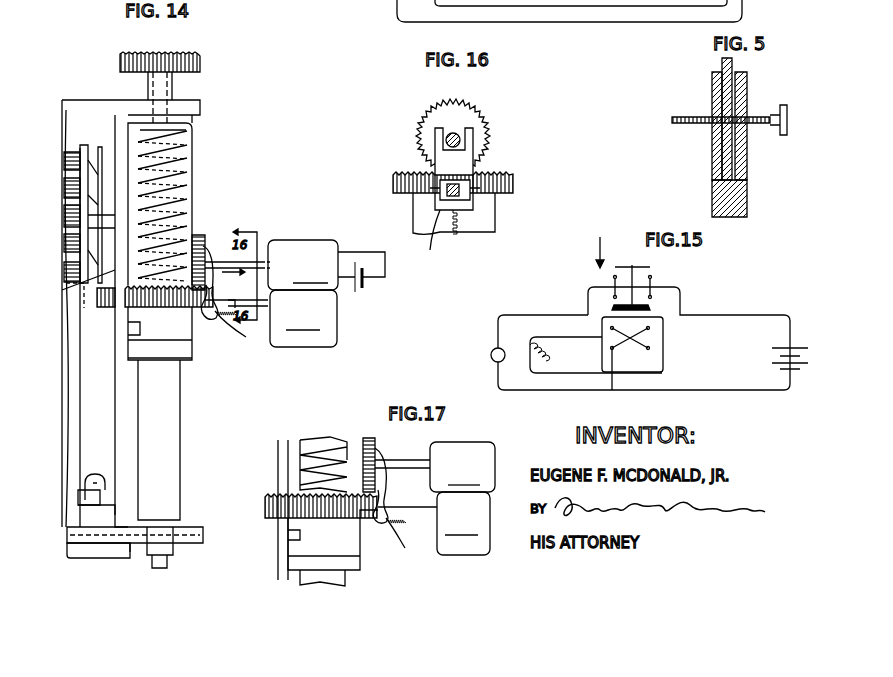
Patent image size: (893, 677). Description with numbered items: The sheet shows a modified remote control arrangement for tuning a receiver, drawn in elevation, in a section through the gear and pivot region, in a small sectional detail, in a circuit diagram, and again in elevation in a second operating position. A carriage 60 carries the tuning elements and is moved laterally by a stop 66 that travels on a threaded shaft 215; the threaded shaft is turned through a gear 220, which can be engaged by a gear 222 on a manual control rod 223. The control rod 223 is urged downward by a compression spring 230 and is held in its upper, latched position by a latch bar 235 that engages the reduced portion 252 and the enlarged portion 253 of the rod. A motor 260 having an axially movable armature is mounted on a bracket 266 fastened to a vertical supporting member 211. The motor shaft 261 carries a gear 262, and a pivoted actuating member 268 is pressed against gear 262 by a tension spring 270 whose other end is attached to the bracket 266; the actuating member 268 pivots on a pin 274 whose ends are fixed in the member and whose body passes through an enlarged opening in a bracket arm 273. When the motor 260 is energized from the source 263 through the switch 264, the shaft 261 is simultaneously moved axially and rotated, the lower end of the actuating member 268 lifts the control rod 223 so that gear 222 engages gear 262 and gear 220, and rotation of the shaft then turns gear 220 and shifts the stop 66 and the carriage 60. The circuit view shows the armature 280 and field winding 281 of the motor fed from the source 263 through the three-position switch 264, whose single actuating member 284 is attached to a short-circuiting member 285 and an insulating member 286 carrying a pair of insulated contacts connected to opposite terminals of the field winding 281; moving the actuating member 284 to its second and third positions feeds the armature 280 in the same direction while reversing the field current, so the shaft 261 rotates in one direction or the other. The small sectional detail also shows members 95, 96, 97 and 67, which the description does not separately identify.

In FIG. 14, the compression spring 230 is at (182, 140).
In FIG. 17, the compression spring 230 is at (335, 432).
In FIG. 14, the threaded shaft 215 is at (65, 232).
In FIG. 14, the stop 66 is at (75, 278).
In FIG. 5, the stop 66 is at (702, 128).
In FIG. 14, the gear 220 is at (98, 290).
In FIG. 14, the gear 222 is at (100, 300).
In FIG. 16, the gear 222 is at (490, 170).
In FIG. 17, the gear 222 is at (268, 518).
In FIG. 14, the carriage 60 is at (75, 425).
In FIG. 14, the vertical supporting member 211 is at (122, 432).
In FIG. 14, the manual control rod 223 is at (170, 470).
In FIG. 17, the manual control rod 223 is at (340, 582).
In FIG. 14, the enlarged portion 253 is at (167, 540).
In FIG. 14, the reduced portion 252 is at (172, 565).
In FIG. 14, the latch bar 235 is at (135, 548).
In FIG. 14, the gear 262 is at (200, 240).
In FIG. 16, the gear 262 is at (440, 108).
In FIG. 17, the gear 262 is at (370, 438).
In FIG. 14, the armature shaft 261 is at (231, 260).
In FIG. 16, the armature shaft 261 is at (460, 130).
In FIG. 17, the armature shaft 261 is at (405, 458).
In FIG. 14, the bracket arm 273 is at (232, 312).
In FIG. 16, the bracket arm 273 is at (445, 214).
In FIG. 14, the actuating member 268 is at (210, 318).
In FIG. 16, the actuating member 268 is at (440, 162).
In FIG. 14, the tension spring 270 is at (246, 337).
In FIG. 16, the tension spring 270 is at (460, 226).
In FIG. 17, the tension spring 270 is at (420, 544).
In FIG. 14, the motor having axially movable armature 260 is at (308, 245).
In FIG. 15, the motor having axially movable armature 260 is at (498, 315).
In FIG. 17, the motor having axially movable armature 260 is at (462, 467).
In FIG. 14, the bracket 266 is at (303, 318).
In FIG. 17, the bracket 266 is at (463, 523).
In FIG. 14, the switch 264 is at (352, 250).
In FIG. 15, the switch 264 is at (595, 285).
In FIG. 14, the source 263 is at (358, 288).
In FIG. 15, the source 263 is at (800, 368).
In FIG. 16, the pin 274 is at (473, 210).
In FIG. 5, the side member 96 is at (712, 72).
In FIG. 5, the center member 95 is at (735, 66).
In FIG. 5, the side member 97 is at (748, 95).
In FIG. 5, the base 67 is at (748, 205).
In FIG. 15, the armature 280 is at (490, 355).
In FIG. 15, the short-circuiting member 285 is at (632, 268).
In FIG. 15, the actuating member 284 is at (652, 276).
In FIG. 15, the insulating member 286 is at (663, 338).
In FIG. 15, the field winding 281 is at (535, 358).